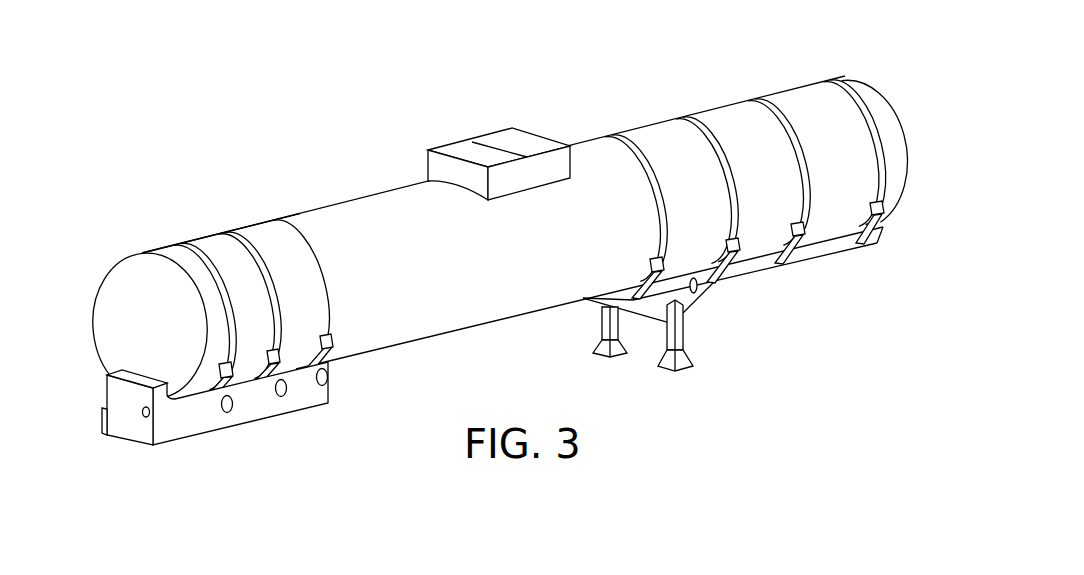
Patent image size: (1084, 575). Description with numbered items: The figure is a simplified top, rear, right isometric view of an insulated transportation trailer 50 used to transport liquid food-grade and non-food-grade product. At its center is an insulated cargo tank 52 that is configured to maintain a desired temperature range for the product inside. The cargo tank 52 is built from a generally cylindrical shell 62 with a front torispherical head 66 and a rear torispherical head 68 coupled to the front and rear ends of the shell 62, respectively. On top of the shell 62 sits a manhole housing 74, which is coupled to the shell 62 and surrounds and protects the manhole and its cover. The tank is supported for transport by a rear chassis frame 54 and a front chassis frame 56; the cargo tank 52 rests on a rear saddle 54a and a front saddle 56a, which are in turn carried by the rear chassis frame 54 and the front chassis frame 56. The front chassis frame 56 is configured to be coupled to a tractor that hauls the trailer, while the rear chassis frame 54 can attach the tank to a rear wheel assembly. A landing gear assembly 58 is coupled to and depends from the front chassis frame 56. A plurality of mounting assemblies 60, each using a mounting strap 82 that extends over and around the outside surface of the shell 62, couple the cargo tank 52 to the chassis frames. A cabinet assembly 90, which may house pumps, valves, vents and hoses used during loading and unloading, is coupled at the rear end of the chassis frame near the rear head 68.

The insulated transportation trailer 50 is at (150, 118).
The insulated cargo tank 52 is at (420, 346).
The rear chassis frame 54 is at (193, 443).
The rear saddle 54a is at (237, 411).
The front chassis frame 56 is at (743, 332).
The front saddle 56a is at (819, 262).
The landing gear assembly 58 is at (686, 339).
The mounting assemblies 60 is at (331, 369).
The cylindrical shell 62 is at (397, 217).
The front torispherical head 66 is at (900, 137).
The rear torispherical head 68 is at (117, 303).
The manhole housing 74 is at (549, 130).
The mounting strap 82 is at (195, 255).
The cabinet assembly 90 is at (127, 443).